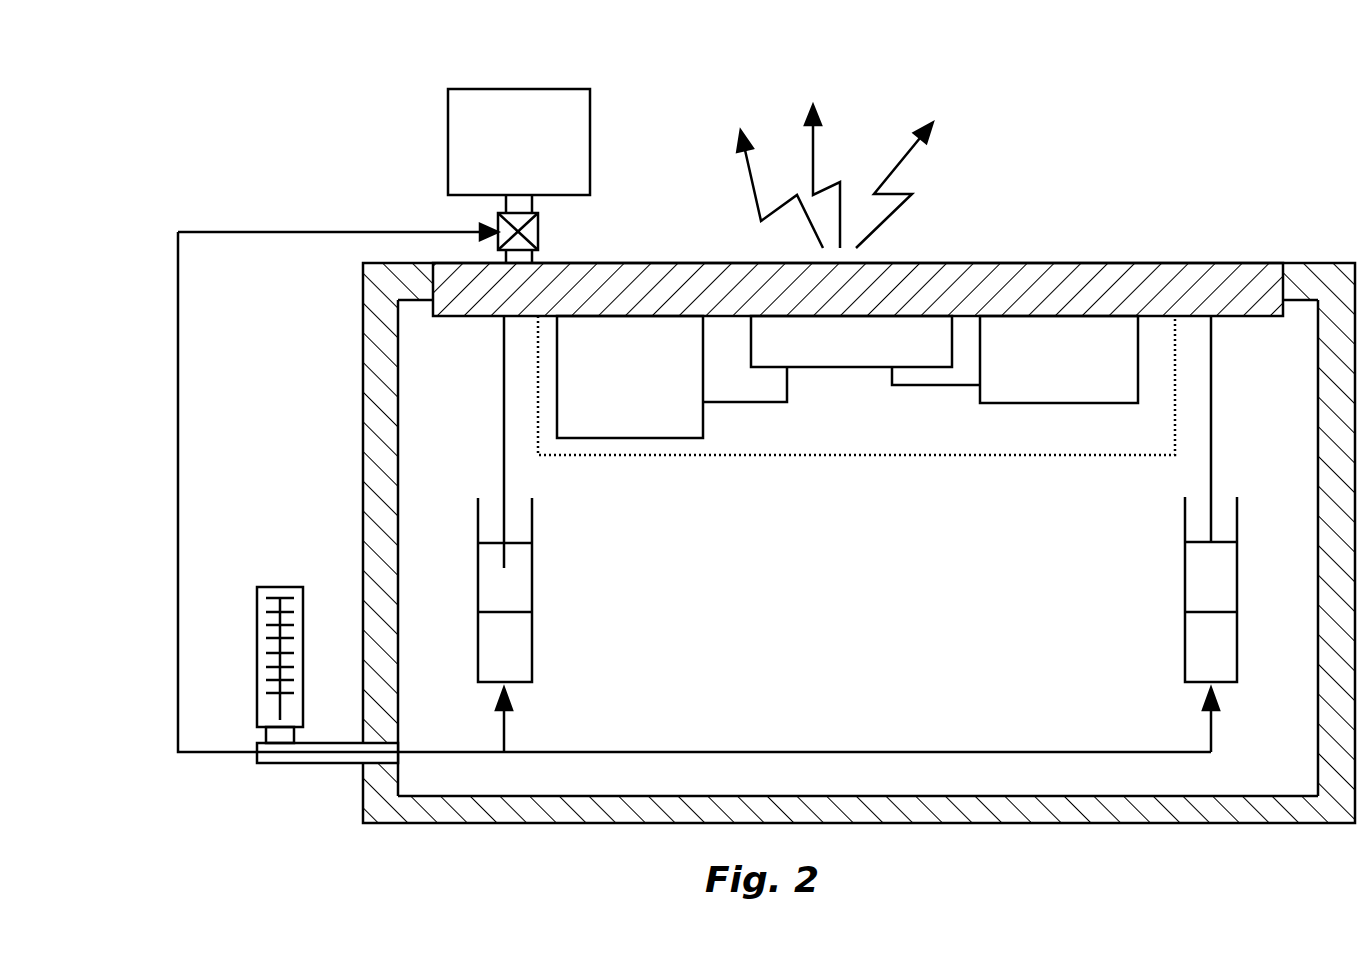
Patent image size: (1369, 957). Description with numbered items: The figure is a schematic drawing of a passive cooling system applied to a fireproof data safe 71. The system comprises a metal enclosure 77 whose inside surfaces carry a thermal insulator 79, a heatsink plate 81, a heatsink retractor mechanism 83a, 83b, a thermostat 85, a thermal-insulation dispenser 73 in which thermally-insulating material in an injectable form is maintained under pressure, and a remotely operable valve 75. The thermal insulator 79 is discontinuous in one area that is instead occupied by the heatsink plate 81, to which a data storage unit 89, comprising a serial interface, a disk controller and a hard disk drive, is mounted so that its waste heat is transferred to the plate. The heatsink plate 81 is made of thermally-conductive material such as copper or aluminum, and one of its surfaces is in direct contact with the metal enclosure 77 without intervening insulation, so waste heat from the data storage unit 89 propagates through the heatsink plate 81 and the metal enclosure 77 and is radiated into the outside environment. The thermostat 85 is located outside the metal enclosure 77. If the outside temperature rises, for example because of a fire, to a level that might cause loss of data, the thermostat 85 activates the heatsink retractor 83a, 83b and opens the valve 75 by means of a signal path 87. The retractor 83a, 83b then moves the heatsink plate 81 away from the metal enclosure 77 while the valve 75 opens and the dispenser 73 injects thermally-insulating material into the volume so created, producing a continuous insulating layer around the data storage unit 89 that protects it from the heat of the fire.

The fireproof data safe 71 is at (343, 172).
The thermal-insulation dispenser 73 is at (469, 124).
The remotely operable valve 75 is at (538, 236).
The metal enclosure 77 is at (1300, 823).
The thermal insulator 79 is at (641, 823).
The heatsink plate 81 is at (1113, 263).
The heatsink retractor 83a is at (1184, 567).
The heatsink retractor 83b is at (504, 568).
The thermostat 85 is at (280, 620).
The signal path 87 is at (197, 385).
The data storage unit 89 is at (789, 482).